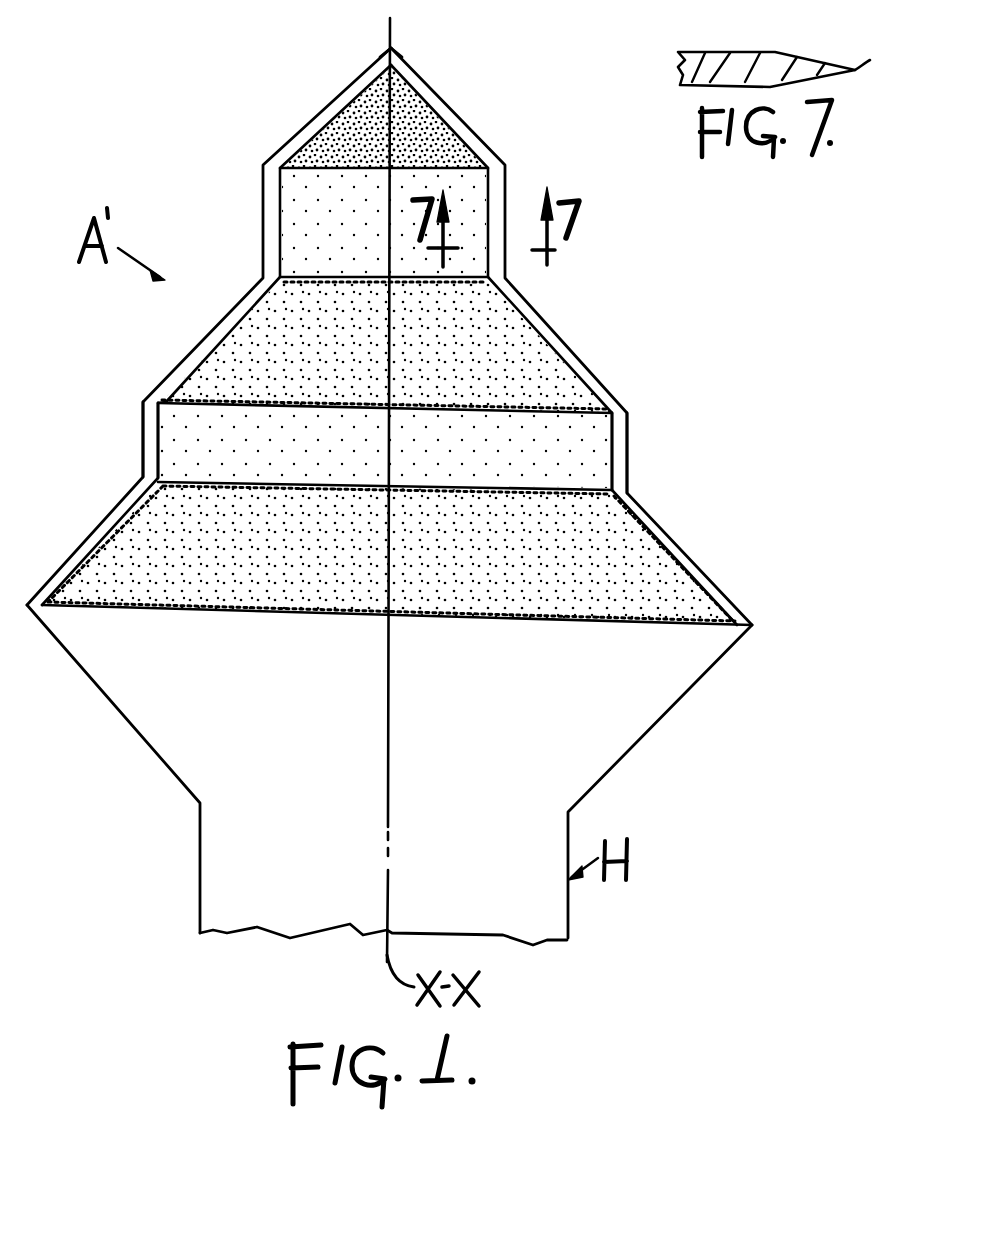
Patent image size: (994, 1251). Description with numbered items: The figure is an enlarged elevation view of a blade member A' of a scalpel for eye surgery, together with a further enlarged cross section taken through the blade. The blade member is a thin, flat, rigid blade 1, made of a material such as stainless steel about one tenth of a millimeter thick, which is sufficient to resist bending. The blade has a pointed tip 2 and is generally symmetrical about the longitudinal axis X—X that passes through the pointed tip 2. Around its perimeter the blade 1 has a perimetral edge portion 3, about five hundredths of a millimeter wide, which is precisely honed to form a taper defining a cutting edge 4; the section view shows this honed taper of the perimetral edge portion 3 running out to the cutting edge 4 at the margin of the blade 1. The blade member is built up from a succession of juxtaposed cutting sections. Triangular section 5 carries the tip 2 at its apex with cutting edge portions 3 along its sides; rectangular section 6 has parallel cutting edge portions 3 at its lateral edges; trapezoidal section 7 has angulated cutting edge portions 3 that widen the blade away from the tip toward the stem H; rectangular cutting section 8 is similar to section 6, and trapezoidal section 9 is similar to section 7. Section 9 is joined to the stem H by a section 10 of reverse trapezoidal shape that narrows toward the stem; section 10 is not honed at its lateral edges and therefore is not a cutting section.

In FIG. 7, the blade 1 is at (708, 52).
In FIG. 1, the pointed tip 2 is at (395, 48).
In FIG. 1, the perimetral edge portion 3 is at (520, 131).
In FIG. 7, the perimetral edge portion 3 is at (812, 11).
In FIG. 1, the cutting edge 4 is at (678, 440).
In FIG. 7, the cutting edge 4 is at (884, 24).
In FIG. 1, the triangular section 5 is at (413, 130).
In FIG. 1, the rectangular section 6 is at (307, 185).
In FIG. 1, the trapezoidal section 7 is at (525, 375).
In FIG. 1, the rectangular cutting section 8 is at (585, 460).
In FIG. 1, the trapezoidal section 9 is at (658, 570).
In FIG. 1, the reverse trapezoidal section 10 is at (663, 685).